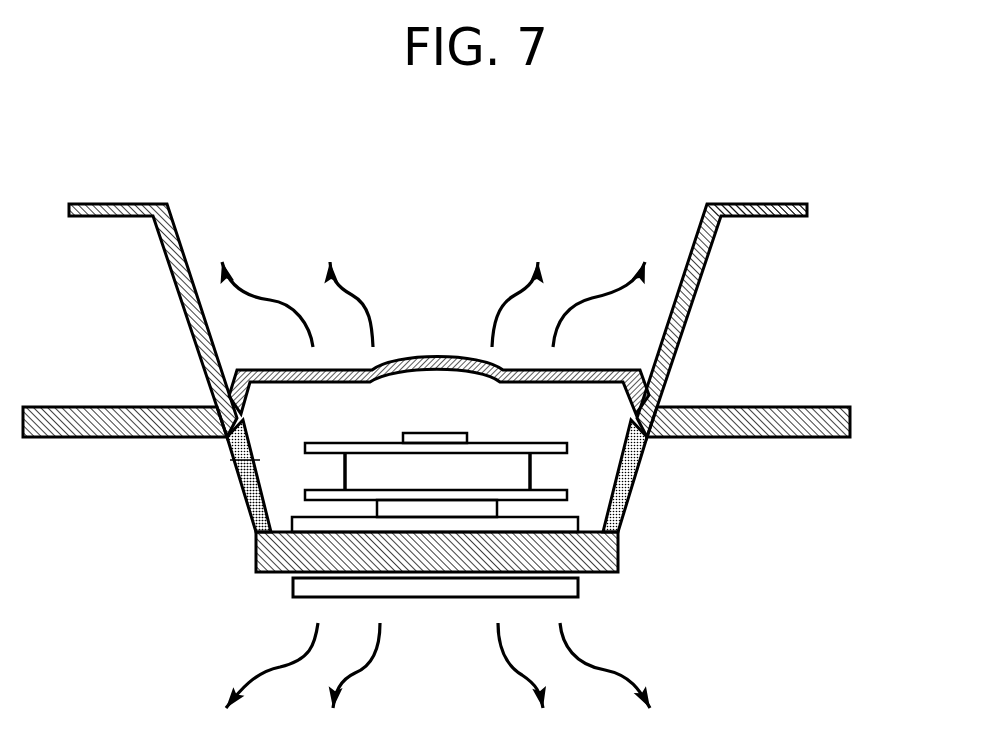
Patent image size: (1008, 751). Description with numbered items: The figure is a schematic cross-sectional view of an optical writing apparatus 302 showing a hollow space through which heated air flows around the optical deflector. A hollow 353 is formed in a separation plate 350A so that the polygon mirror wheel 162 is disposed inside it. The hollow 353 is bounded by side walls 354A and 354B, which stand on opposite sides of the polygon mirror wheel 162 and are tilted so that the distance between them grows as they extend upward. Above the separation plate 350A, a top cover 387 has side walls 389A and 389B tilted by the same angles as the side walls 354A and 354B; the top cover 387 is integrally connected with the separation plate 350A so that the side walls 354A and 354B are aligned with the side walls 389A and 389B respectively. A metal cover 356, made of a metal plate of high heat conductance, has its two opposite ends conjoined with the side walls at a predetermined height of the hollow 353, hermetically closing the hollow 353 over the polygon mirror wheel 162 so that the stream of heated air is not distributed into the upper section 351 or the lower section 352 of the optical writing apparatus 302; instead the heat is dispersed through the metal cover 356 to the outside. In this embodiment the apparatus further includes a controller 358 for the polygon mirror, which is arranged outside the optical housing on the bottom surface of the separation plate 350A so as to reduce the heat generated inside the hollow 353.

The optical writing apparatus 302 is at (718, 154).
The top cover 387 is at (786, 205).
The side wall 389A is at (165, 255).
The side wall 389B is at (700, 252).
The upper section 351 is at (772, 316).
The metal cover 356 is at (593, 368).
The separation plate 350A is at (783, 387).
The polygon mirror wheel 162 is at (493, 460).
The hollow 353 is at (233, 465).
The lower section 352 is at (722, 476).
The side wall 354A is at (247, 502).
The side wall 354B is at (628, 503).
The controller 358 is at (577, 590).